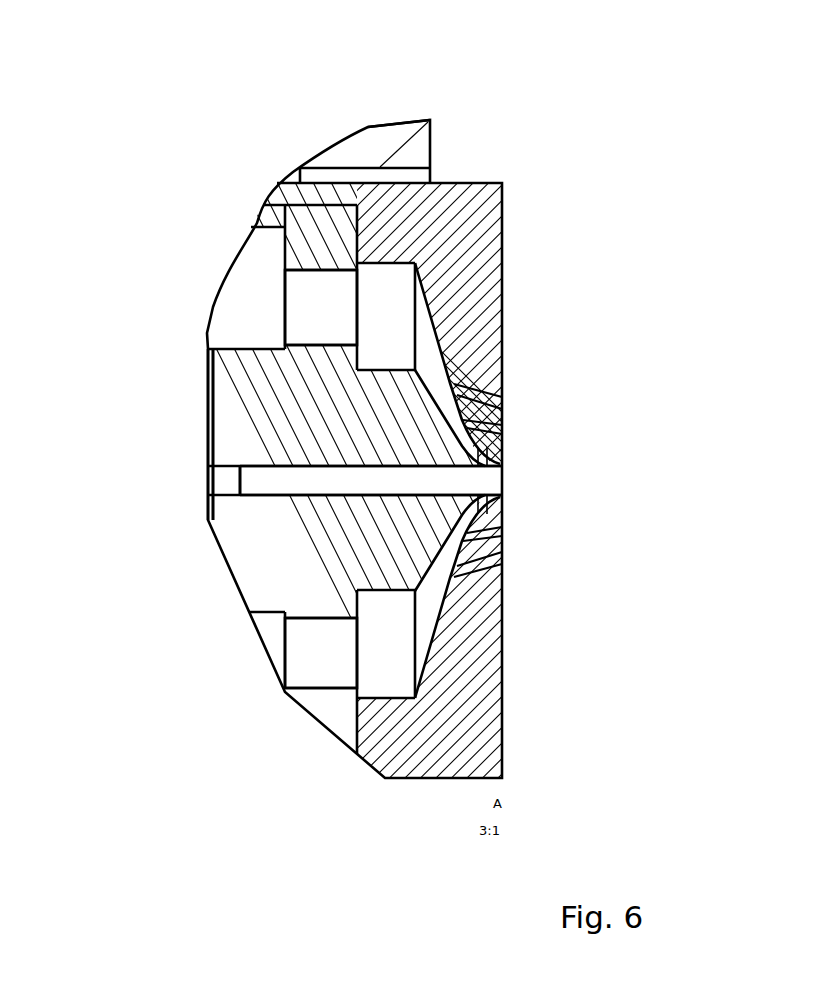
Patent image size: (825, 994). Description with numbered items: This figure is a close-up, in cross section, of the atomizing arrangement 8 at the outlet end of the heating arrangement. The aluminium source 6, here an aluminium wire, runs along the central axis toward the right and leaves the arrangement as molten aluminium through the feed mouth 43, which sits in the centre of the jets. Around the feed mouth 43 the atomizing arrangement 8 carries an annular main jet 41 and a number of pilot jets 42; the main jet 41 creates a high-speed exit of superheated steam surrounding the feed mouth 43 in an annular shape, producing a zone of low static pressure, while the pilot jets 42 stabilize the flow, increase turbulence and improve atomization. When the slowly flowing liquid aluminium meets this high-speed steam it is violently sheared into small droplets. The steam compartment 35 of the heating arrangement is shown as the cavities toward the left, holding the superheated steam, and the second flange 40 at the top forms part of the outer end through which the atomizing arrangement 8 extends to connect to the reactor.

The aluminium source 6 is at (220, 481).
The atomizing arrangement 8 is at (503, 183).
The steam compartment 35 is at (253, 294).
The second flange 40 is at (409, 120).
The annular main jet 41 is at (502, 506).
The pilot jets 42 is at (502, 398).
The feed mouth 43 is at (502, 480).